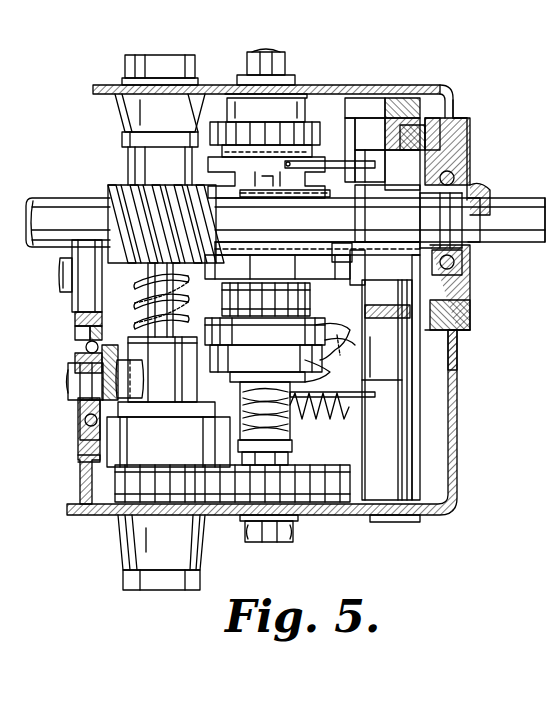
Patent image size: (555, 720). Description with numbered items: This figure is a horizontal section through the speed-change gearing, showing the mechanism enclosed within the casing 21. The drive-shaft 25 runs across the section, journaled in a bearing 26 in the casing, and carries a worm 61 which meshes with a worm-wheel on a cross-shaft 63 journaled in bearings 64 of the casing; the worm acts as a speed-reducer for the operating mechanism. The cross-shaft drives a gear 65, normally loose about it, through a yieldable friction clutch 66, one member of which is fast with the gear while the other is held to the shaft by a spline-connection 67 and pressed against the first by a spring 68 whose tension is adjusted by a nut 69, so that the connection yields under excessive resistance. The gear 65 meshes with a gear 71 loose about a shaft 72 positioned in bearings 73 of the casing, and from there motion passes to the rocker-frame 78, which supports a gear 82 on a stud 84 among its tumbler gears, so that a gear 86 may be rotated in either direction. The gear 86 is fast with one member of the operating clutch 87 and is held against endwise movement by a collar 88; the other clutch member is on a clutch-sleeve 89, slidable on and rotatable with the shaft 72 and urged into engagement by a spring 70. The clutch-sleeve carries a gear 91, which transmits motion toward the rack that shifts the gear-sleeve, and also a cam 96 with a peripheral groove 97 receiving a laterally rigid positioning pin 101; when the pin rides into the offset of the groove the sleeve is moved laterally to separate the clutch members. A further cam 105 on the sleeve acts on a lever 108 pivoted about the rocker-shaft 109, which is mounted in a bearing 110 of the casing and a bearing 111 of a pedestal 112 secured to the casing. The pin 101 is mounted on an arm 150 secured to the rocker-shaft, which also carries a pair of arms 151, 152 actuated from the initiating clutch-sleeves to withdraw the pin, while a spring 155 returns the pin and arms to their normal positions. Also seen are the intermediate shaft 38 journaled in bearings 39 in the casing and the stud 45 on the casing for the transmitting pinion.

The casing 21 is at (457, 470).
The drive-shaft 25 is at (70, 198).
The bearing 26 is at (480, 180).
The intermediate shaft 38 is at (83, 388).
The bearings 39 is at (78, 408).
The stud 45 is at (62, 275).
The worm 61 is at (112, 195).
The cross-shaft 63 is at (75, 331).
The bearings 64 is at (125, 78).
The gear 65 is at (118, 480).
The friction clutch 66 is at (143, 445).
The spline-connection 67 is at (75, 343).
The spring 68 is at (75, 324).
The nut 69 is at (110, 265).
The spring 70 is at (260, 398).
The gear 71 is at (300, 503).
The shaft 72 is at (268, 200).
The bearings 73 is at (285, 520).
The rocker-frame 78 is at (385, 135).
The gear 82 is at (440, 118).
The stud 84 is at (410, 140).
The gear 86 is at (325, 175).
The operating clutch 87 is at (345, 160).
The collar 88 is at (275, 140).
The clutch-sleeve 89 is at (300, 245).
The gear 91 is at (225, 300).
The cam 96 is at (265, 331).
The peripheral groove 97 is at (266, 363).
The positioning pin 101 is at (315, 360).
The cam 105 is at (285, 267).
The lever 108 is at (420, 322).
The shaft 109 is at (458, 100).
The bearing 110 is at (420, 518).
The bearing 111 is at (470, 302).
The pedestal 112 is at (470, 277).
The arm 150 is at (333, 335).
The arm 151 is at (420, 396).
The arm 152 is at (375, 135).
The spring 155 is at (350, 434).